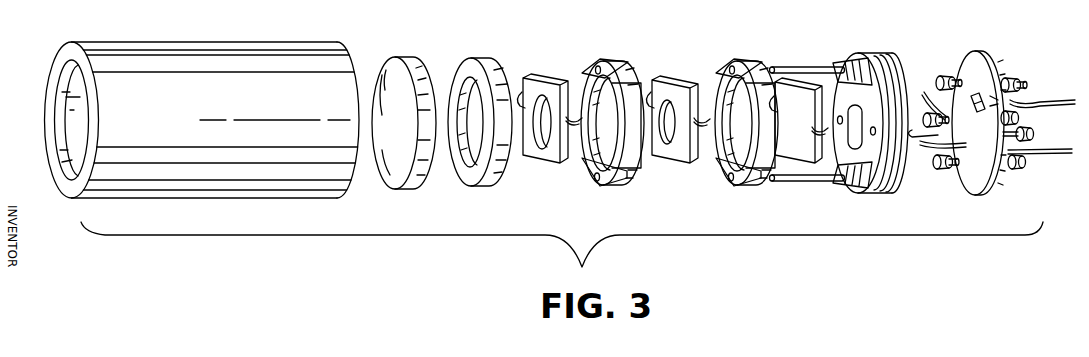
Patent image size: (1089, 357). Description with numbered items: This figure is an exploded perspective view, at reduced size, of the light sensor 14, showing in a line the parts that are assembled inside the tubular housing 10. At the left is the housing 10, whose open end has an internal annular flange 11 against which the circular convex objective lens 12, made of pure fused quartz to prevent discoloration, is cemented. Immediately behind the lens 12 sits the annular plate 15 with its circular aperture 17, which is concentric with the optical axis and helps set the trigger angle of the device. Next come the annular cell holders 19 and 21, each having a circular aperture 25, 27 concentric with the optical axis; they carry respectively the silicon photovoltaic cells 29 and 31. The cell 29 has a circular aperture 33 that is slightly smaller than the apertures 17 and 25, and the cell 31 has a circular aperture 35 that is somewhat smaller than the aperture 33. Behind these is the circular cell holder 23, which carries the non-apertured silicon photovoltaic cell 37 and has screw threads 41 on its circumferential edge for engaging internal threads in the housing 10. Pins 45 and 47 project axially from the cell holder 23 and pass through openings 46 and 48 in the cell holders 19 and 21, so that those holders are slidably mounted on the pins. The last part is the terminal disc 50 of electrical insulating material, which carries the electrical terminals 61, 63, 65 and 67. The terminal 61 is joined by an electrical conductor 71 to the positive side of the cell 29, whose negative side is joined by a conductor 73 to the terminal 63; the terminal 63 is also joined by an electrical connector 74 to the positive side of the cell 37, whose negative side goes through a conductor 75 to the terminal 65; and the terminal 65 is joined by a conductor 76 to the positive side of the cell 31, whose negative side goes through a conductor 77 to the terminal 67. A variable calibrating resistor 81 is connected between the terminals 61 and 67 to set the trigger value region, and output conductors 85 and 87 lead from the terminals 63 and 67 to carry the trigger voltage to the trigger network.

The tubular housing 10 is at (212, 54).
The internal annular flange 11 is at (62, 64).
The circular convex objective lens 12 is at (390, 60).
The light sensor 14 is at (449, 246).
The annular plate 15 is at (478, 58).
The circular aperture 17 is at (464, 76).
The annular cell holder 19 is at (617, 60).
The annular cell holder 21 is at (738, 61).
The circular cell holder 23 is at (840, 62).
The circular aperture 25 is at (598, 108).
The circular aperture 27 is at (722, 108).
The silicon photovoltaic cell 29 is at (538, 163).
The silicon photovoltaic cell 31 is at (670, 160).
The circular aperture 33 is at (543, 97).
The circular aperture 35 is at (667, 100).
The non-apertured silicon photovoltaic cell 37 is at (794, 85).
The screw threads 41 is at (876, 186).
The pin 45 is at (815, 67).
The opening 46 is at (598, 66).
The pin 47 is at (794, 183).
The opening 48 is at (723, 66).
The terminal disc 50 is at (975, 60).
The electrical terminal 61 is at (1034, 136).
The electrical terminal 63 is at (962, 170).
The electrical terminal 65 is at (933, 116).
The electrical terminal 67 is at (964, 78).
The electrical conductor 71 is at (576, 116).
The electrical conductor 73 is at (521, 92).
The electrical connector 74 is at (812, 130).
The electrical conductor 75 is at (775, 96).
The electrical conductor 76 is at (700, 117).
The electrical conductor 77 is at (650, 92).
The variable calibrating resistor 81 is at (1002, 90).
The output conductor 85 is at (1050, 156).
The output conductor 87 is at (1046, 99).